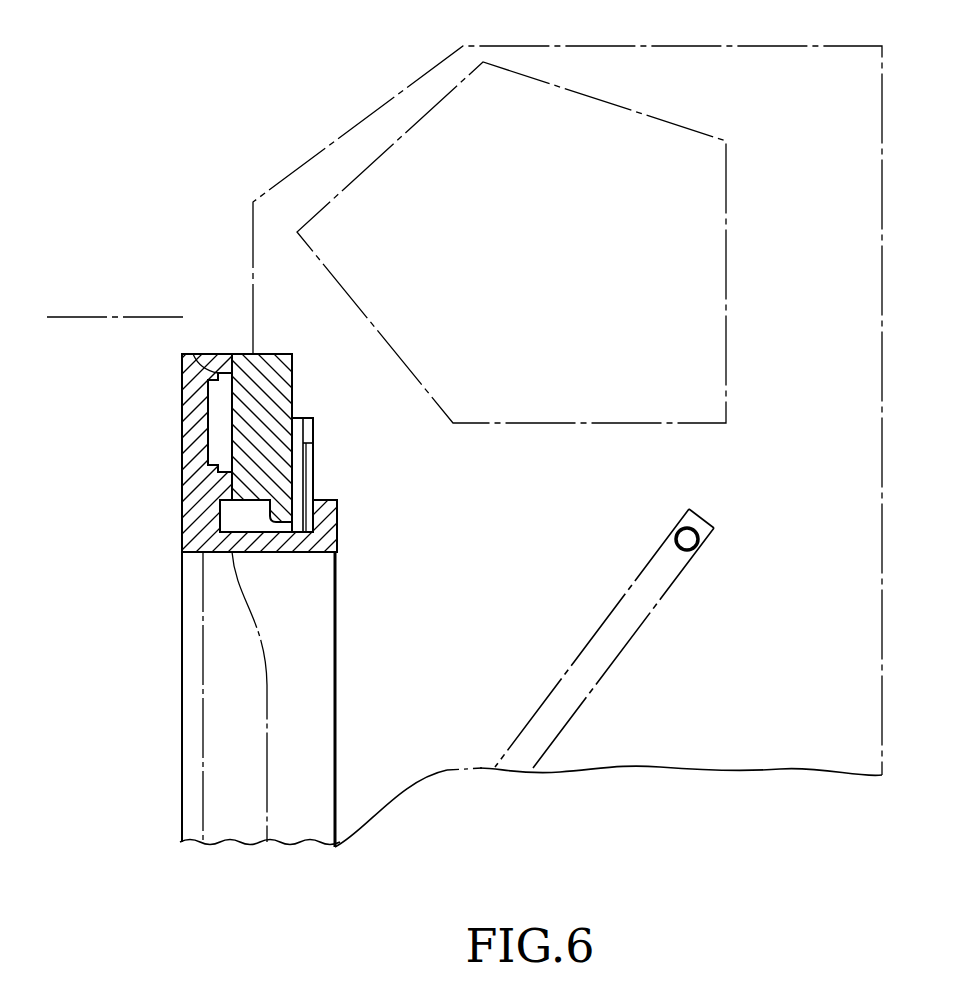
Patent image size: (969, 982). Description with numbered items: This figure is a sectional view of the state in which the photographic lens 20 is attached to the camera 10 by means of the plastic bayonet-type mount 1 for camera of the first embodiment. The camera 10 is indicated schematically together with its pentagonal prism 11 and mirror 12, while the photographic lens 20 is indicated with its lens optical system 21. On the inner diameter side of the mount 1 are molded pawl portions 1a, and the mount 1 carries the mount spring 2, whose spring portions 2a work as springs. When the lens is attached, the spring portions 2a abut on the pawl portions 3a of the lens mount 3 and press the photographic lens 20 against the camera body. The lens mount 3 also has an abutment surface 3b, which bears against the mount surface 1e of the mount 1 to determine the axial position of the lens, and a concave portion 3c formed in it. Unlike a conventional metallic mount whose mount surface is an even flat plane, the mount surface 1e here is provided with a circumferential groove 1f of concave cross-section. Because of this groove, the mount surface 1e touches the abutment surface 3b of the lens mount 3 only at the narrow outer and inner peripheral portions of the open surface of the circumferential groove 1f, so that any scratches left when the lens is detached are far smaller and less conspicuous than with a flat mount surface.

The mount for camera 1 is at (260, 354).
The pawl portions 1a is at (318, 497).
The mount surface 1e is at (216, 368).
The circumferential groove 1f is at (235, 395).
The mount spring 2 is at (297, 418).
The spring portions 2a is at (313, 443).
The lens mount 3 is at (182, 672).
The pawl portions 3a is at (327, 520).
The abutment surface 3b is at (222, 352).
The concave portion 3c is at (208, 437).
The camera 10 is at (667, 46).
The pentagonal prism 11 is at (726, 247).
The mirror 12 is at (628, 646).
The photographic lens 20 is at (92, 317).
The lens optical system 21 is at (203, 777).